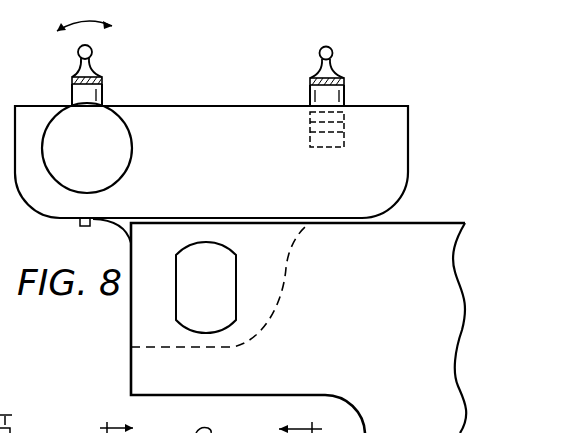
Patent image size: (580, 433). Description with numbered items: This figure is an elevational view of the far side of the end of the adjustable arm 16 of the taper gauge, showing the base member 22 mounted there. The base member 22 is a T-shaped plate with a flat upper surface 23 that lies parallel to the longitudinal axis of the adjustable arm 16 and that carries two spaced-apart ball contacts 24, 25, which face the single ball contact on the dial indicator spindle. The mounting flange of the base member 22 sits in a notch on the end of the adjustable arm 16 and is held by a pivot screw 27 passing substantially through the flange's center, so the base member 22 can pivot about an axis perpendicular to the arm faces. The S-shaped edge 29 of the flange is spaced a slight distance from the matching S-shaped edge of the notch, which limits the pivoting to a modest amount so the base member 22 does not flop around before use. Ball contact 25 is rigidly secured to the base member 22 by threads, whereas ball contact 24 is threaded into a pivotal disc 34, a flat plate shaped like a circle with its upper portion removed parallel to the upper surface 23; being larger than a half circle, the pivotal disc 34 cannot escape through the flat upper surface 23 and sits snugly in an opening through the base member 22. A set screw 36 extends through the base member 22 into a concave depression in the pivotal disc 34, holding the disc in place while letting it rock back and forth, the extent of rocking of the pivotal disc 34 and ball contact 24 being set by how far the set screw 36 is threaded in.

The adjustable arm 16 is at (425, 224).
The base member 22 is at (410, 122).
The flat upper surface 23 is at (199, 105).
The ball contact 24 is at (95, 63).
The ball contact 25 is at (320, 51).
The pivot screw 27 is at (237, 283).
The S-shaped edge 29 is at (282, 262).
The pivotal disc 34 is at (127, 138).
The set screw 36 is at (84, 228).